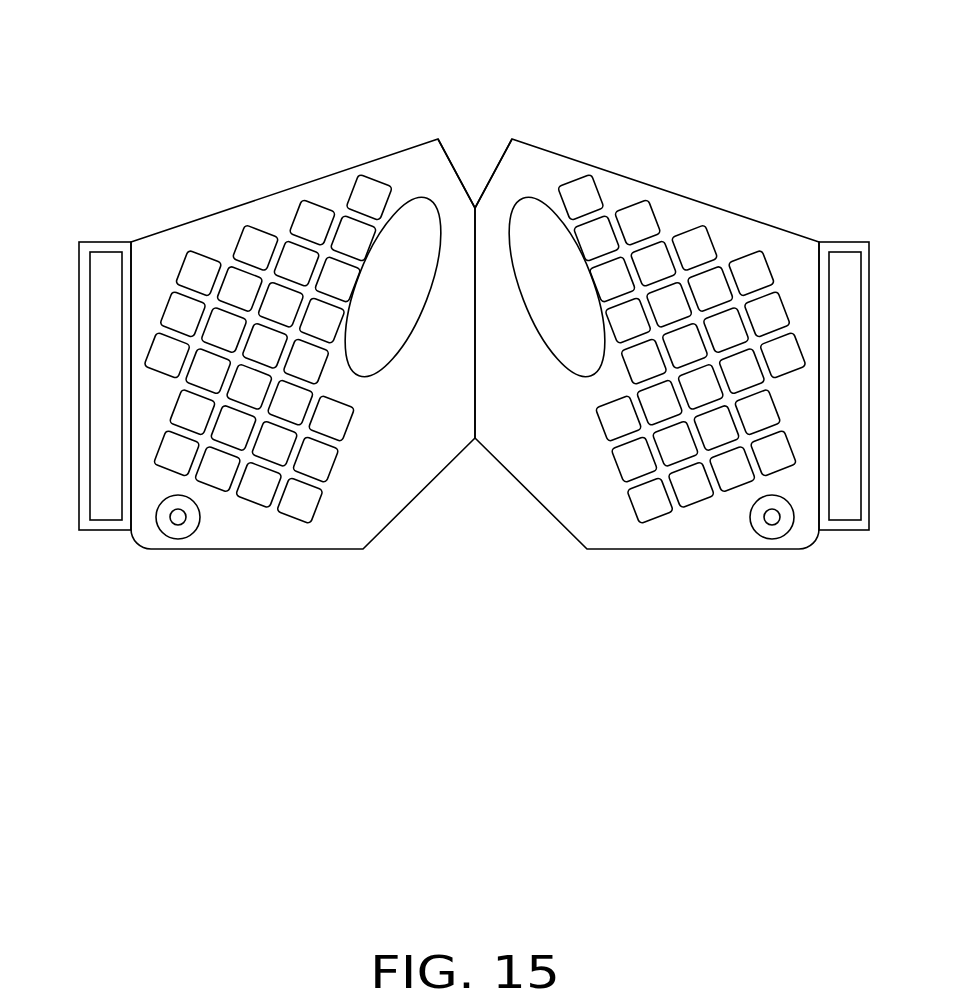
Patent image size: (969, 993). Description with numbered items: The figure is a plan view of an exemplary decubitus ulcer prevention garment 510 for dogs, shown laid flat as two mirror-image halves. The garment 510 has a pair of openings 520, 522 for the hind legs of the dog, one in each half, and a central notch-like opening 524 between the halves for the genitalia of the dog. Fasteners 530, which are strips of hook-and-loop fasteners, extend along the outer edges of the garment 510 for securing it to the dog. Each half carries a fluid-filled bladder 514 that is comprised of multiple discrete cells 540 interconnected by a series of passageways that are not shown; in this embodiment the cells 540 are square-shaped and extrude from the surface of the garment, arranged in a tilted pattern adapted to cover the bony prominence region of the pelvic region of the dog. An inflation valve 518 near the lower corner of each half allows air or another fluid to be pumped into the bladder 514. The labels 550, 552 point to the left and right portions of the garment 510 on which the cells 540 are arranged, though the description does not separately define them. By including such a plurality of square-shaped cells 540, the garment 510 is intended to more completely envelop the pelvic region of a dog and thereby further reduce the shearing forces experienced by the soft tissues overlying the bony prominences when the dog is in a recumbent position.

The decubitus ulcer prevention garment 510 is at (200, 83).
The fluid-filled bladder 514 is at (198, 263).
The inflation valve 518 is at (178, 517).
The opening 520 is at (428, 196).
The opening 522 is at (522, 196).
The opening 524 is at (460, 178).
The fasteners 530 is at (107, 260).
The cells 540 is at (365, 188).
The left housing portion 550 is at (368, 155).
The right housing portion 552 is at (722, 222).